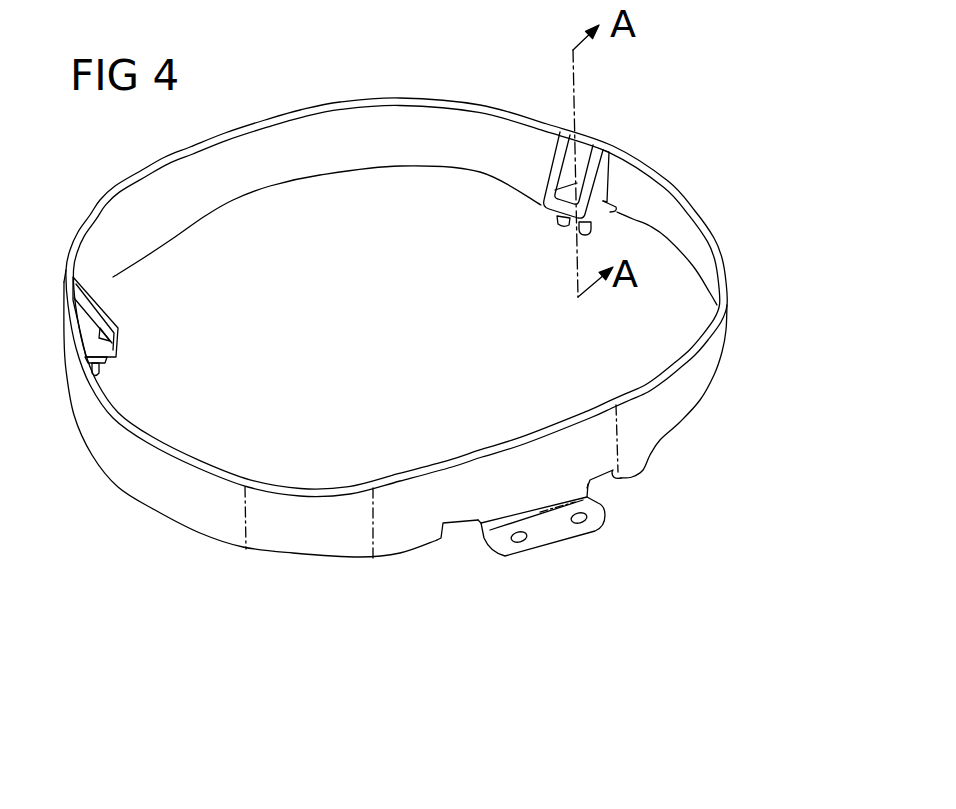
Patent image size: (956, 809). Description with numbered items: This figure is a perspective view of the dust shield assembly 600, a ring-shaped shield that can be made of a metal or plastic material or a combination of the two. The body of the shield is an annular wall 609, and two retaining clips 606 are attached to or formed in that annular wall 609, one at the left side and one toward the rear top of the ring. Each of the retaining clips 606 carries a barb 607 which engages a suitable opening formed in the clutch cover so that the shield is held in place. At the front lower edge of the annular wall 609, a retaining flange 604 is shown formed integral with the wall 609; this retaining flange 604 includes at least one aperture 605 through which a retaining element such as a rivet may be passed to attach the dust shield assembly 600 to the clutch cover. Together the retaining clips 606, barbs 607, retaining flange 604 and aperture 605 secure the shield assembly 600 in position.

The dust shield assembly 600 is at (700, 380).
The retaining flange 604 is at (550, 528).
The aperture 605 is at (513, 540).
The retaining clip 606 is at (543, 205).
The barb 607 is at (580, 228).
The annular wall 609 is at (667, 180).